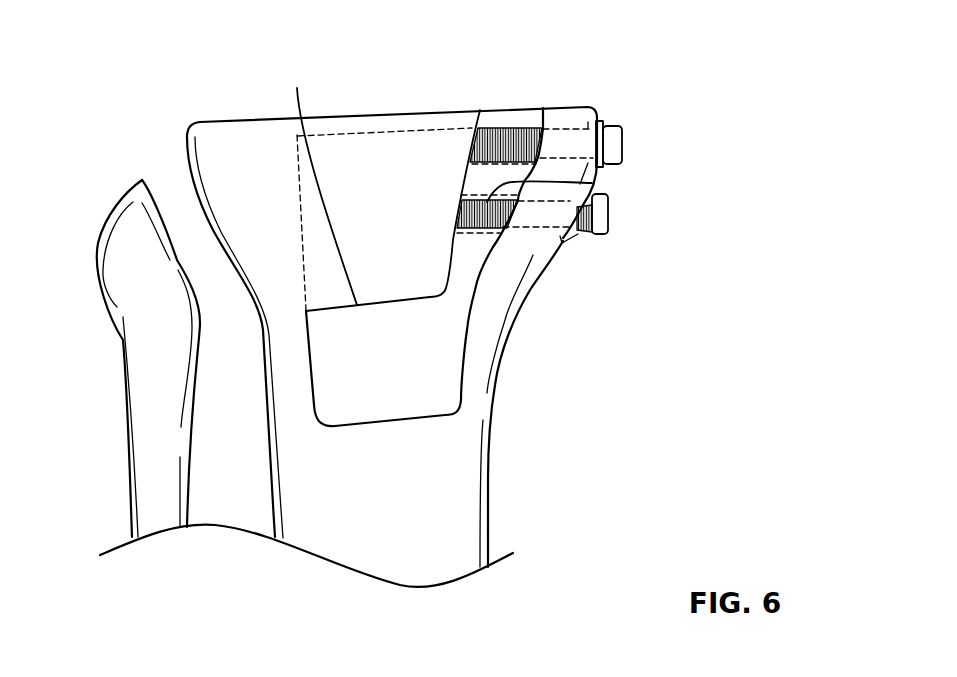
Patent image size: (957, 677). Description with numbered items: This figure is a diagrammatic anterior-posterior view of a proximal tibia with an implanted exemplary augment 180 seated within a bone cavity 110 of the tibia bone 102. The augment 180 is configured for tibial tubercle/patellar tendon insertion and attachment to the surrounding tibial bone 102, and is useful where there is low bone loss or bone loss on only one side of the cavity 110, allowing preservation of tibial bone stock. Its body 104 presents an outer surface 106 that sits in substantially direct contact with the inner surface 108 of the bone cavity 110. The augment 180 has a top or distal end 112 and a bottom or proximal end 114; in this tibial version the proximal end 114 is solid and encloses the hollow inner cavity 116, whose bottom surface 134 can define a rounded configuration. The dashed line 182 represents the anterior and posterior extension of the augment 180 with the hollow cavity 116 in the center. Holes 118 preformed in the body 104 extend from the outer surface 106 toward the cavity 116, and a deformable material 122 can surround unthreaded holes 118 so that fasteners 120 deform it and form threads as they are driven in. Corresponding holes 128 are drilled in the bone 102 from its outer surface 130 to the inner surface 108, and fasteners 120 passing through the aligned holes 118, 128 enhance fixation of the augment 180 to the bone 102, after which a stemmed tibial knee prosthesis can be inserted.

The bone 102 is at (491, 456).
The body 104 is at (437, 409).
The outer surface 106 is at (477, 286).
The inner surface 108 is at (466, 384).
The bone cavity 110 is at (503, 279).
The distal end 112 is at (357, 432).
The proximal end 114 is at (500, 103).
The inner cavity 116 is at (347, 163).
The holes 118 is at (593, 181).
The fastener 120 is at (622, 146).
The deformable material 122 is at (525, 127).
The holes 128 is at (573, 130).
The outer surface 130 is at (485, 520).
The bottom surface 134 is at (316, 184).
The augment 180 is at (434, 332).
The dashed line 182 is at (403, 128).